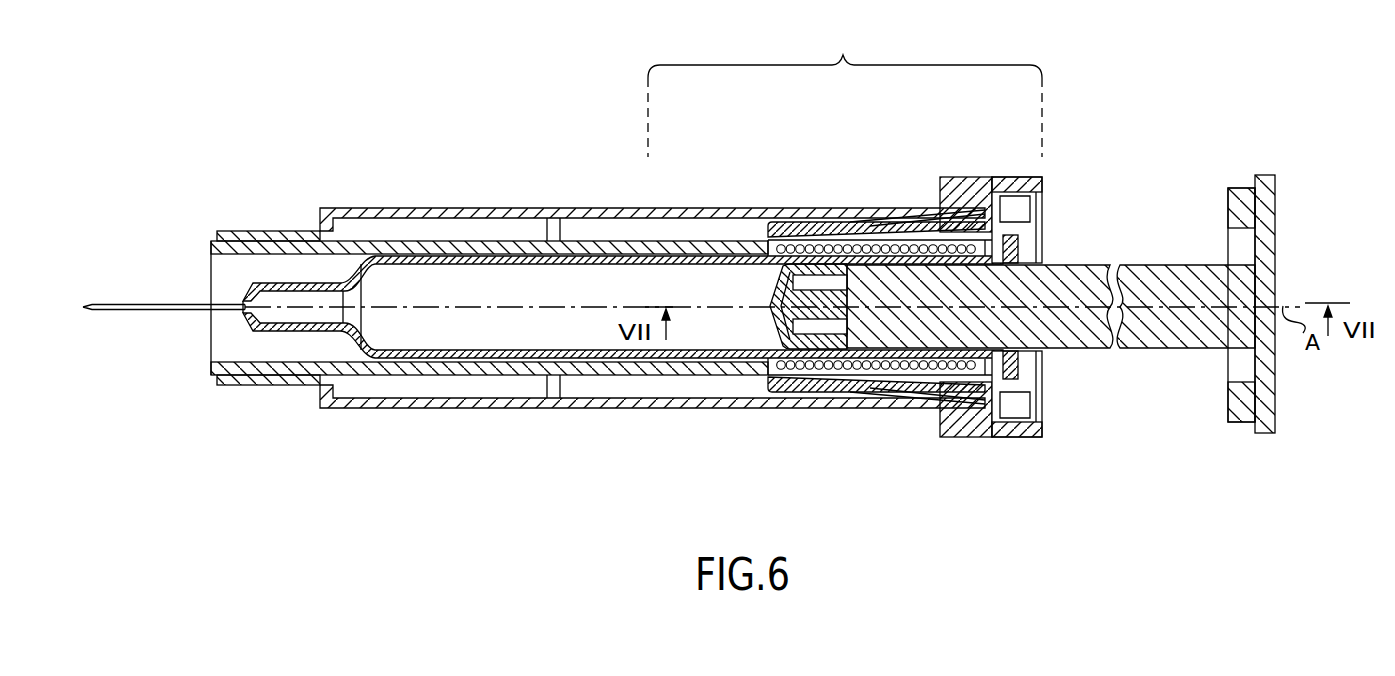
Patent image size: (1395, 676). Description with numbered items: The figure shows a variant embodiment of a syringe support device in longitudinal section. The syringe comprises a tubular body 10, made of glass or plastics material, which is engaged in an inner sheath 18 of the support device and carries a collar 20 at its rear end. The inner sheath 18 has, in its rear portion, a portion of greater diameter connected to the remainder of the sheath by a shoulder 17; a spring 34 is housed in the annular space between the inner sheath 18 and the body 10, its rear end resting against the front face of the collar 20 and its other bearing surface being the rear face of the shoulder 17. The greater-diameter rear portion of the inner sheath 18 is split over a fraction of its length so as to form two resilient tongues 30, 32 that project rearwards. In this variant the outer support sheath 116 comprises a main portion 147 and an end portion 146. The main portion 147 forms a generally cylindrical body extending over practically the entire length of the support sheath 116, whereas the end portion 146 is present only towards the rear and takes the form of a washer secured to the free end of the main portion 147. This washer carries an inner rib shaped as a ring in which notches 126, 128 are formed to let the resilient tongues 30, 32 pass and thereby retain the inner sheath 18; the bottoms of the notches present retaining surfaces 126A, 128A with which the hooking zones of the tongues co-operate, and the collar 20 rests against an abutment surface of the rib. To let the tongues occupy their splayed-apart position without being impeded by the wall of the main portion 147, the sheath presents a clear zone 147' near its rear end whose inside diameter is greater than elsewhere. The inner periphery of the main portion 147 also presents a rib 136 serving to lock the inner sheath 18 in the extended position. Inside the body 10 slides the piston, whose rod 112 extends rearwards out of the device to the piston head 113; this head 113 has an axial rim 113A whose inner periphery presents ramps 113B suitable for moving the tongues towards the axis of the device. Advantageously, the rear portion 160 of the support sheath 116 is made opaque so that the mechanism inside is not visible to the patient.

The body 10 is at (430, 350).
The shoulder 17 is at (735, 408).
The inner sheath 18 is at (610, 376).
The collar 20 is at (1024, 248).
The resilient tongue 30 is at (878, 210).
The resilient tongue 32 is at (930, 390).
The spring 34 is at (813, 368).
The plunger rod 112 is at (1156, 280).
The head 113 is at (1275, 235).
The axial rim 113A is at (1243, 205).
The ramps 113B is at (1238, 362).
The support sheath 116 is at (520, 192).
The notch 126 is at (1018, 193).
The retaining surface 126A is at (1010, 196).
The notch 128 is at (1020, 408).
The retaining surface 128A is at (1000, 414).
The rib 136 is at (545, 380).
The end portion 146 is at (958, 183).
The main portion 147 is at (652, 275).
The clear zone 147' is at (917, 270).
The rear portion 160 is at (845, 88).